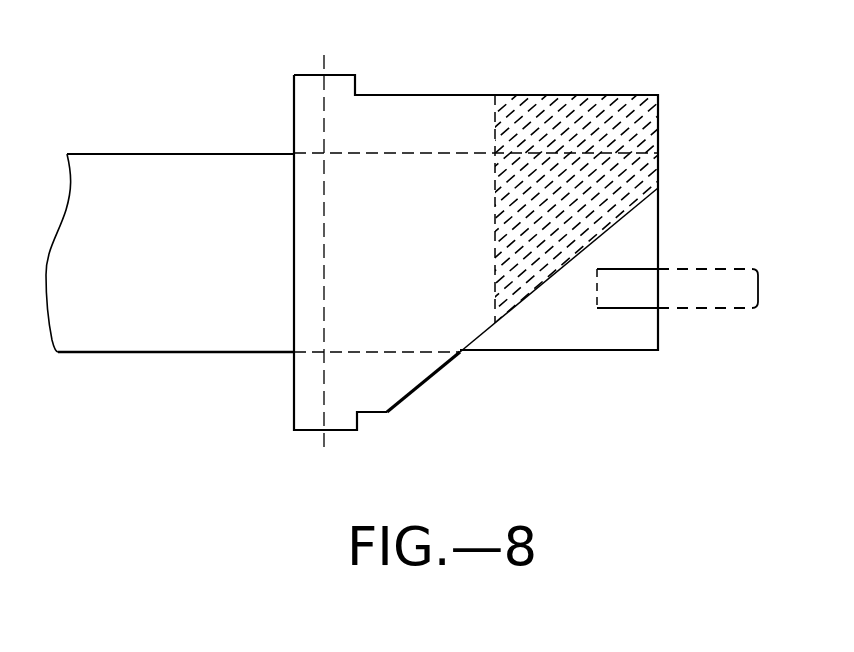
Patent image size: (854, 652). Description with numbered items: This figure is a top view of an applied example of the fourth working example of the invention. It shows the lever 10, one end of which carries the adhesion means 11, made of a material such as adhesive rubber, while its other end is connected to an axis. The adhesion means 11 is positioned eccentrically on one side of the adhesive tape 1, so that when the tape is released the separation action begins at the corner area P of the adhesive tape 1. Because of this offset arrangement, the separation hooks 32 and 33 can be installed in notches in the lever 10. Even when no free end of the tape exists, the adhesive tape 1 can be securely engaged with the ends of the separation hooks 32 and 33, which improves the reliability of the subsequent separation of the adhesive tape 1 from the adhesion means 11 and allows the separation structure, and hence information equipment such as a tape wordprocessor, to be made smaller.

The adhesive tape 1 is at (168, 333).
The lever 10 is at (433, 120).
The adhesion means 11 is at (592, 112).
The corner area P is at (658, 155).
The separation hook 32 is at (677, 336).
The separation hook 33 is at (712, 288).